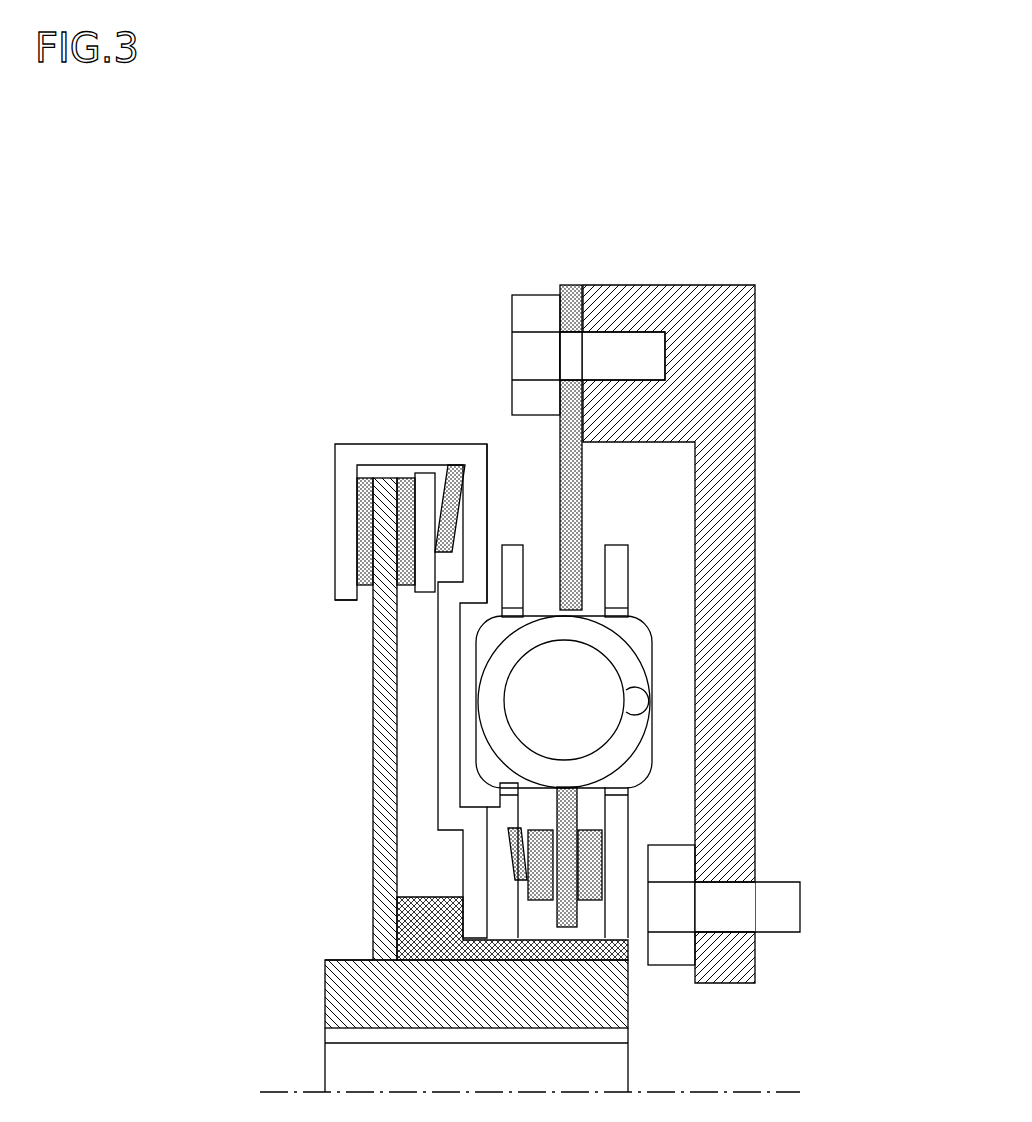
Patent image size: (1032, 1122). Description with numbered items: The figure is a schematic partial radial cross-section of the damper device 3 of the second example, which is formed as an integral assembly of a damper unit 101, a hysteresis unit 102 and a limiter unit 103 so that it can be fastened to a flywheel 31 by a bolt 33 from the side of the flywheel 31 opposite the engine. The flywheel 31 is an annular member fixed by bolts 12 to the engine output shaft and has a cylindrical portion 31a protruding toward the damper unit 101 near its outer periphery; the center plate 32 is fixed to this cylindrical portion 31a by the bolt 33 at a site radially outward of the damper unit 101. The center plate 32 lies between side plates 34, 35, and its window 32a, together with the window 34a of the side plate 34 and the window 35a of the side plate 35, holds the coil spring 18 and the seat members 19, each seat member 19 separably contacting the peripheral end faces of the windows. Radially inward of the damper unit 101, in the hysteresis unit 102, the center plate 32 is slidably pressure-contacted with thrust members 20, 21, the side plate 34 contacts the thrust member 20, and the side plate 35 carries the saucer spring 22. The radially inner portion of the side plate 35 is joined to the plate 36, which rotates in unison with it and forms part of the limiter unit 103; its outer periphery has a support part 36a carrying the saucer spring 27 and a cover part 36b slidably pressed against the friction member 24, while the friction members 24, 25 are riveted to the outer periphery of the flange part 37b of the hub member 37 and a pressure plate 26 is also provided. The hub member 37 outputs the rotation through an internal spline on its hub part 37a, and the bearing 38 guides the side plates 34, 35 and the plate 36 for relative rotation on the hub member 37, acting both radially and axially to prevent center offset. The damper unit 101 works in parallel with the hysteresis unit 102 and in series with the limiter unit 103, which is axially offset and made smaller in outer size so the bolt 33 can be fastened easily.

The damper device 3 is at (826, 256).
The bolt 12 is at (790, 908).
The coil spring 18 is at (640, 708).
The seat member 19 is at (640, 633).
The thrust member 20 is at (605, 845).
The thrust member 21 is at (530, 890).
The saucer spring 22 is at (515, 850).
The friction member 24 is at (360, 505).
The friction member 25 is at (407, 488).
The pressure plate 26 is at (427, 480).
The saucer spring 27 is at (455, 482).
The flywheel 31 is at (757, 485).
The cylindrical portion 31a is at (652, 300).
The center plate 32 is at (570, 480).
The window 32a is at (580, 608).
The bolt 33 is at (522, 356).
The side plate 34 is at (622, 570).
The window 34a is at (623, 615).
The side plate 35 is at (512, 555).
The window 35a is at (500, 790).
The plate 36 is at (448, 712).
The support part 36a is at (487, 467).
The cover part 36b is at (345, 568).
The hub member 37 is at (335, 958).
The hub part 37a is at (325, 995).
The flange part 37b is at (372, 650).
The bearing 38 is at (628, 955).
The damper unit 101 is at (672, 685).
The hysteresis unit 102 is at (633, 852).
The limiter unit 103 is at (320, 528).